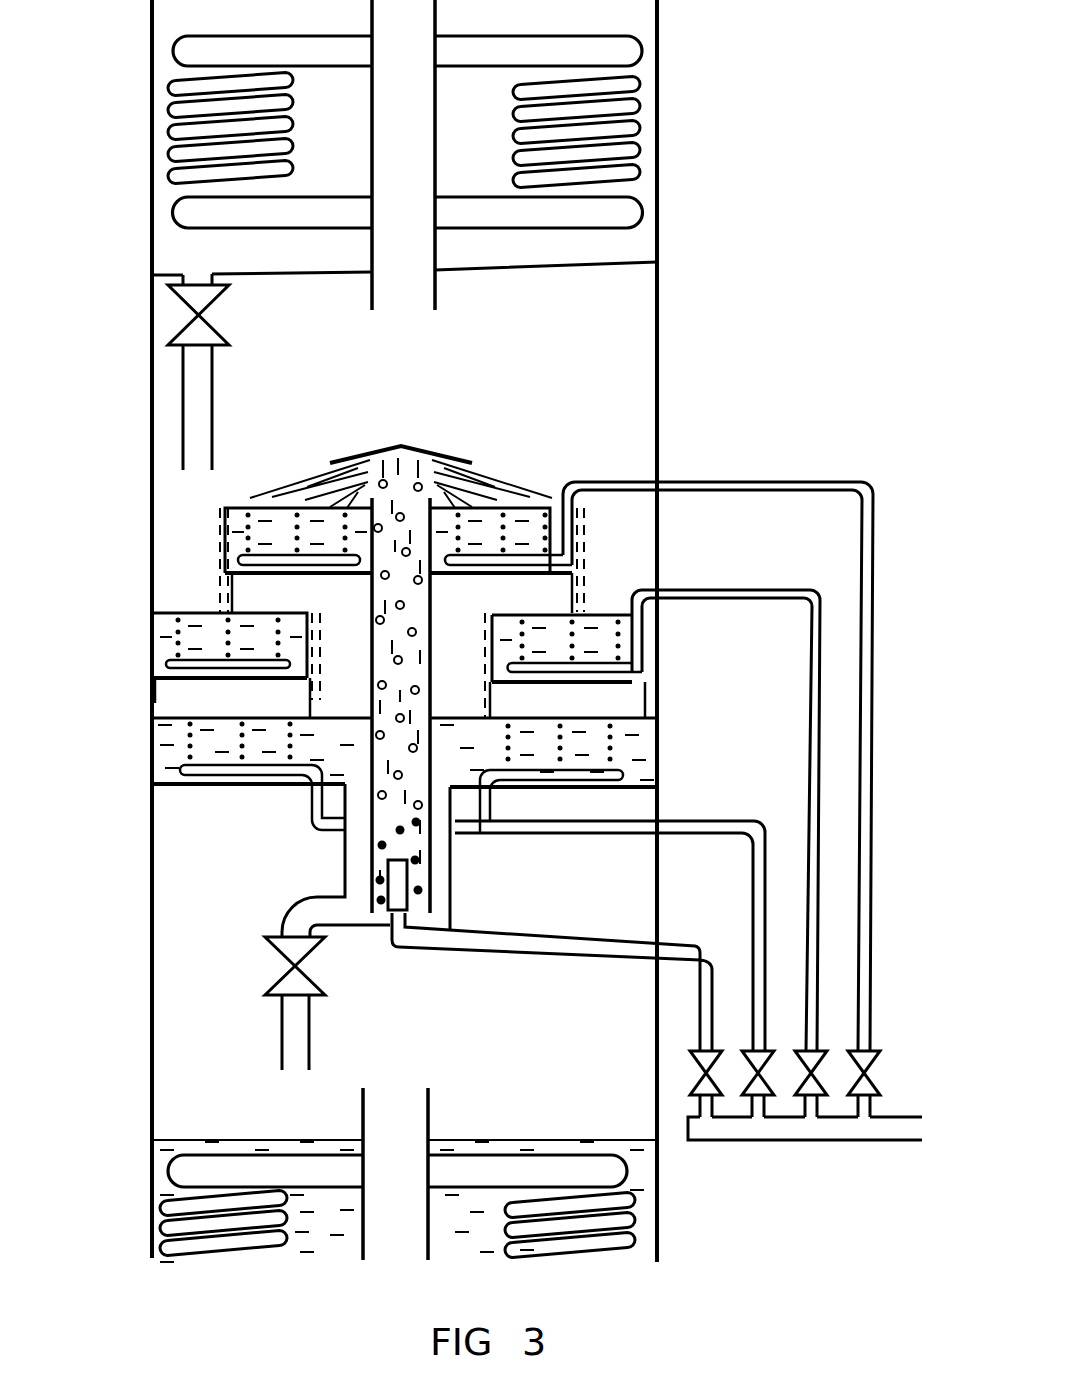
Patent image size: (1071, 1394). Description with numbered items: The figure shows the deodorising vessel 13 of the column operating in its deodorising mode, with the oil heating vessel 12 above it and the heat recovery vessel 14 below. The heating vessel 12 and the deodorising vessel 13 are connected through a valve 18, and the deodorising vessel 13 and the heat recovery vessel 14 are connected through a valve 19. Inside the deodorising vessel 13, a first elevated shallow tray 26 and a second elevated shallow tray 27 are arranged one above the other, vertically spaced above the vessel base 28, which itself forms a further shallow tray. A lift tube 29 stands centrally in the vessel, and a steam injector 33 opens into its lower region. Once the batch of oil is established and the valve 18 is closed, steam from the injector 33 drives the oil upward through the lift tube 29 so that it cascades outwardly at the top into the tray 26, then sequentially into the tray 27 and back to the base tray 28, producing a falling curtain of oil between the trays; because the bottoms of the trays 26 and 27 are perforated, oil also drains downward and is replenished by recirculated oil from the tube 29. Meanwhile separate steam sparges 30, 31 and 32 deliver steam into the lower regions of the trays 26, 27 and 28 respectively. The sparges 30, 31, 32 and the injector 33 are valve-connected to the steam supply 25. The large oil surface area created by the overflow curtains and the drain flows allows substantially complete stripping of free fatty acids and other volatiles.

The oil heating vessel 12 is at (160, 104).
The deodorising vessel 13 is at (170, 703).
The heat recovery vessel 14 is at (160, 1222).
The valve 18 is at (188, 310).
The valve 19 is at (292, 957).
The steam supply 25 is at (826, 1140).
The first elevated shallow tray 26 is at (225, 547).
The second elevated shallow tray 27 is at (165, 680).
The vessel base 28 is at (190, 783).
The lift tube 29 is at (432, 600).
The steam sparge 30 is at (782, 482).
The steam sparge 31 is at (775, 590).
The steam sparge 32 is at (727, 821).
The steam injector 33 is at (525, 941).